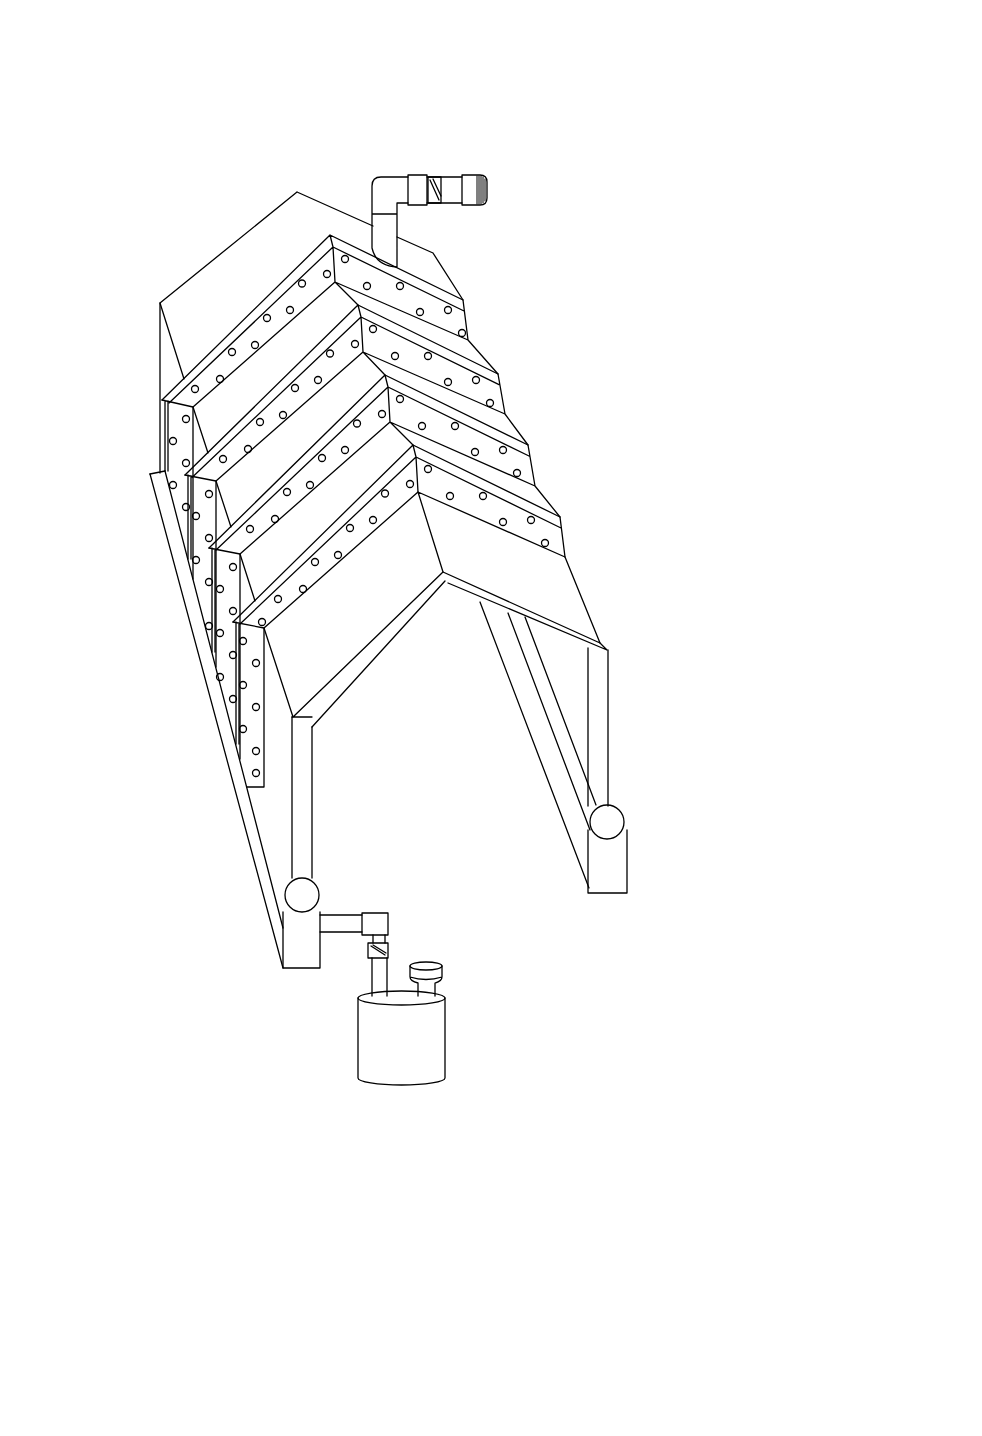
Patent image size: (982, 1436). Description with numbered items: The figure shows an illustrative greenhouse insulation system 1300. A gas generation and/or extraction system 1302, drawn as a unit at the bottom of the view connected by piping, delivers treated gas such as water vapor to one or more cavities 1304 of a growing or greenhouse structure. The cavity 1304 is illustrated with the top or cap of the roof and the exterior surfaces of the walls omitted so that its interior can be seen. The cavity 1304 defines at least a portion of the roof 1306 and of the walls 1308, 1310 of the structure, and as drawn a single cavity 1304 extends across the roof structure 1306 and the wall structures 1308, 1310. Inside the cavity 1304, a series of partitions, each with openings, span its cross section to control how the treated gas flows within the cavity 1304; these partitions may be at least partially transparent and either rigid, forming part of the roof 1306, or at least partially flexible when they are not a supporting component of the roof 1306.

The example system 1300 is at (752, 64).
The gas generation and/or extraction system 1302 is at (401, 1110).
The cavity 1304 is at (558, 571).
The roof 1306 is at (228, 248).
The wall 1308 is at (158, 437).
The wall 1310 is at (610, 697).